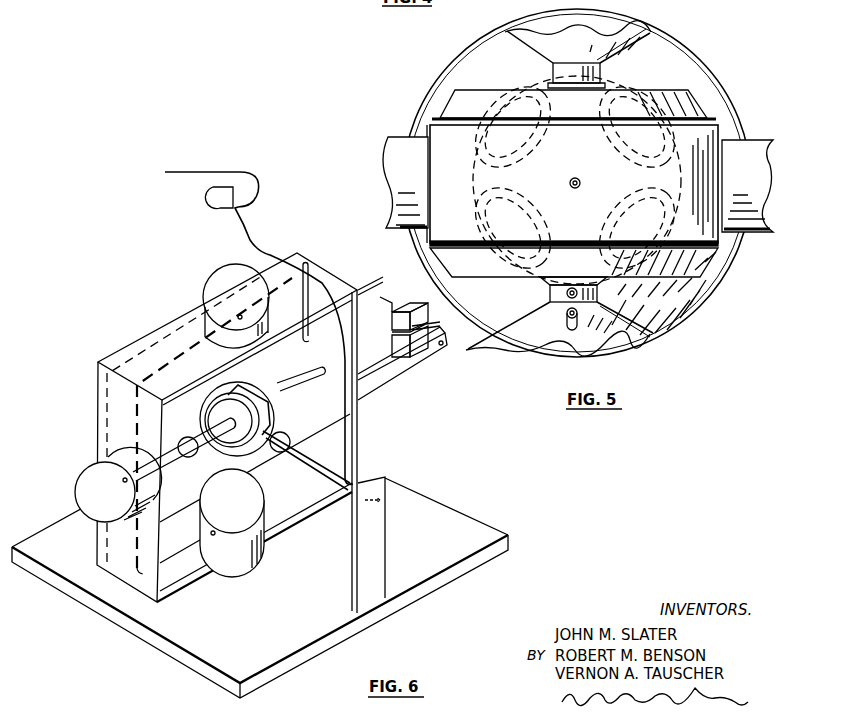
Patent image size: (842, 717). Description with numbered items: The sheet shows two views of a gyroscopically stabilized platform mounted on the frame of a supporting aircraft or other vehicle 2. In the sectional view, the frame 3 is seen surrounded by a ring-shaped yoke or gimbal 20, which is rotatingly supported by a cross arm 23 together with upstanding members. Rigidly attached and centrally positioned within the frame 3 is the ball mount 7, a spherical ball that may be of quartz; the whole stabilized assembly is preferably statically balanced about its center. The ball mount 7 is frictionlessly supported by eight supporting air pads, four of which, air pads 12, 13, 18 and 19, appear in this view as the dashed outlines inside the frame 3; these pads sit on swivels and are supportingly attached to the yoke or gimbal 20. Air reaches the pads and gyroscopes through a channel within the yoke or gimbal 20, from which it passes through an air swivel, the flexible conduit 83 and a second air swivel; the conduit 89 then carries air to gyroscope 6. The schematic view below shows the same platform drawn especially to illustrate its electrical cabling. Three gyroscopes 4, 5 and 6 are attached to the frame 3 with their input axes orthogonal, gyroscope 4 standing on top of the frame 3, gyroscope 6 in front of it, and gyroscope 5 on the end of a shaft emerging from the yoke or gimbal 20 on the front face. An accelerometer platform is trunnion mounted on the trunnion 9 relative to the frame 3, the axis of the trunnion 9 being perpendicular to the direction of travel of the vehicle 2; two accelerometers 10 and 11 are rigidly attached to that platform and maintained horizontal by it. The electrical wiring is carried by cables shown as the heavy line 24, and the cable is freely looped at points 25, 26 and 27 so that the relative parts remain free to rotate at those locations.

In FIG. 6, the vehicle 2 is at (463, 523).
In FIG. 5, the frame 3 is at (583, 37).
In FIG. 6, the frame 3 is at (327, 280).
In FIG. 6, the gyroscope 4 is at (218, 280).
In FIG. 6, the gyroscope 5 is at (102, 505).
In FIG. 6, the gyroscope 6 is at (246, 566).
In FIG. 5, the ball mount 7 is at (600, 84).
In FIG. 6, the trunnion 9 is at (446, 348).
In FIG. 6, the accelerometer 10 is at (424, 313).
In FIG. 6, the accelerometer 11 is at (390, 350).
In FIG. 5, the supporting air pad 12 is at (618, 140).
In FIG. 5, the supporting air pad 13 is at (527, 133).
In FIG. 5, the supporting air pad 18 is at (530, 205).
In FIG. 5, the supporting air pad 19 is at (618, 213).
In FIG. 5, the yoke or gimbal 20 is at (492, 104).
In FIG. 6, the yoke or gimbal 20 is at (253, 389).
In FIG. 5, the cross arm 23 is at (745, 150).
In FIG. 6, the cable 24 is at (354, 426).
In FIG. 6, the cable loop 25 is at (213, 198).
In FIG. 6, the cable loop 26 is at (292, 433).
In FIG. 6, the cable loop 27 is at (192, 463).
In FIG. 5, the flexible conduit 83 is at (566, 293).
In FIG. 5, the conduit 89 is at (565, 317).